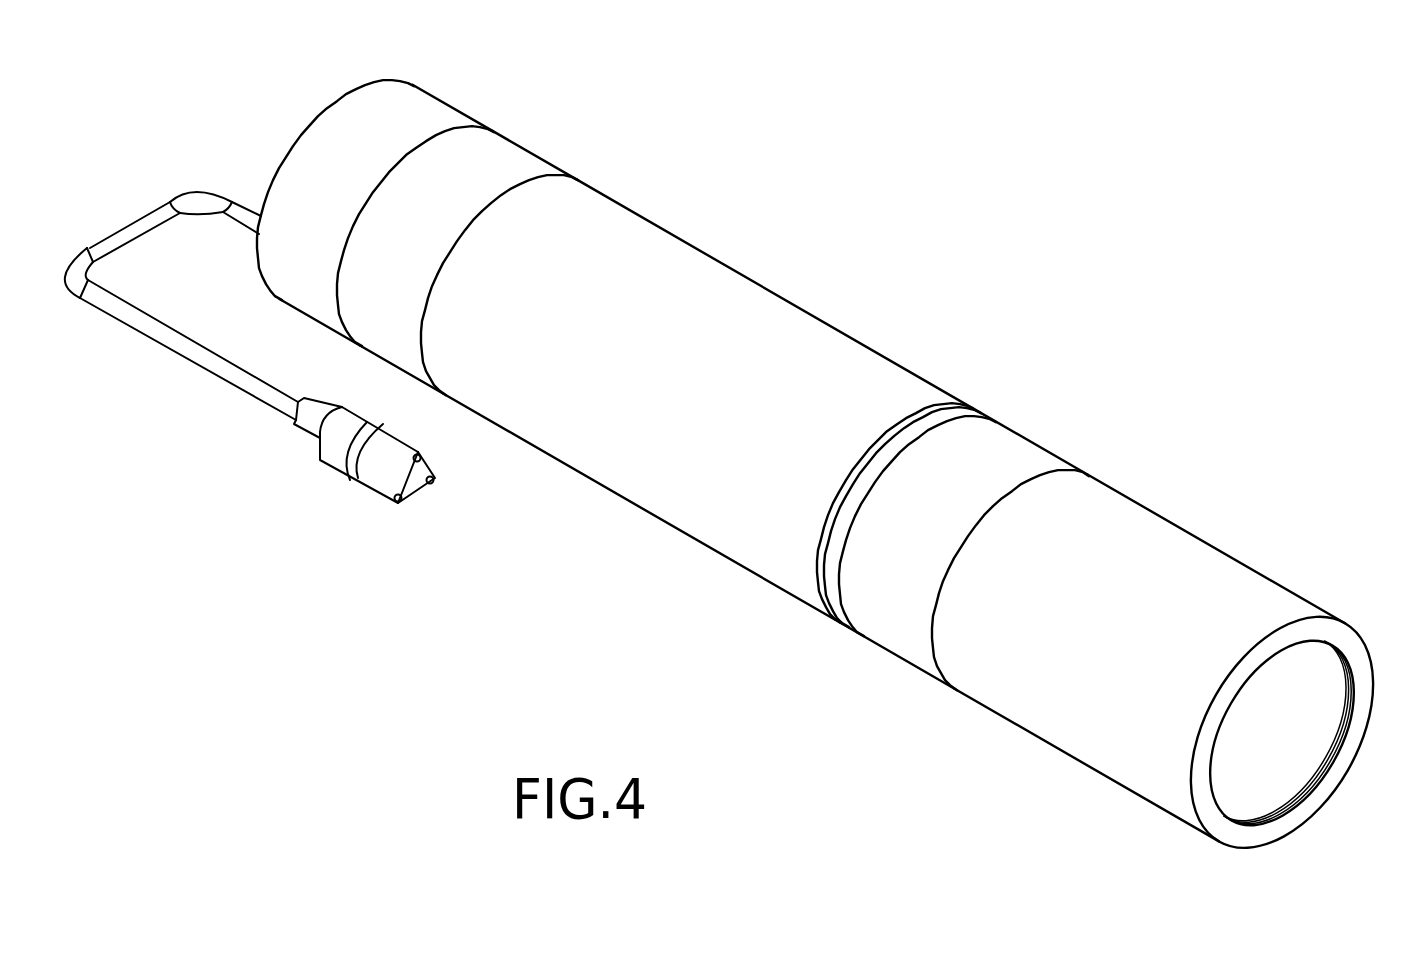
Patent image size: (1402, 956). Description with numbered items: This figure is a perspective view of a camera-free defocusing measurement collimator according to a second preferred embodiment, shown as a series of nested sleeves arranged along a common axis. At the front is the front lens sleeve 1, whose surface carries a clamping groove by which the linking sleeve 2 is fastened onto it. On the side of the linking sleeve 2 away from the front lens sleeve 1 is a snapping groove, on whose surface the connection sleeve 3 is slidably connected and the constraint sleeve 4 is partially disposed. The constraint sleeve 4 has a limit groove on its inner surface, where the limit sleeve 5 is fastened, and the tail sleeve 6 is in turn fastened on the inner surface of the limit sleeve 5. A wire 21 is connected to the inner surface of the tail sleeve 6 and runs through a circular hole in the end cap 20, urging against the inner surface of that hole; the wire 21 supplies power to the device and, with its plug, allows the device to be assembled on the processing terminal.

The front lens sleeve 1 is at (1200, 623).
The linking sleeve 2 is at (1027, 657).
The connection sleeve 3 is at (964, 463).
The constraint sleeve 4 is at (686, 468).
The limit sleeve 5 is at (467, 178).
The tail sleeve 6 is at (338, 150).
The end cap 20 is at (123, 235).
The wire 21 is at (346, 448).